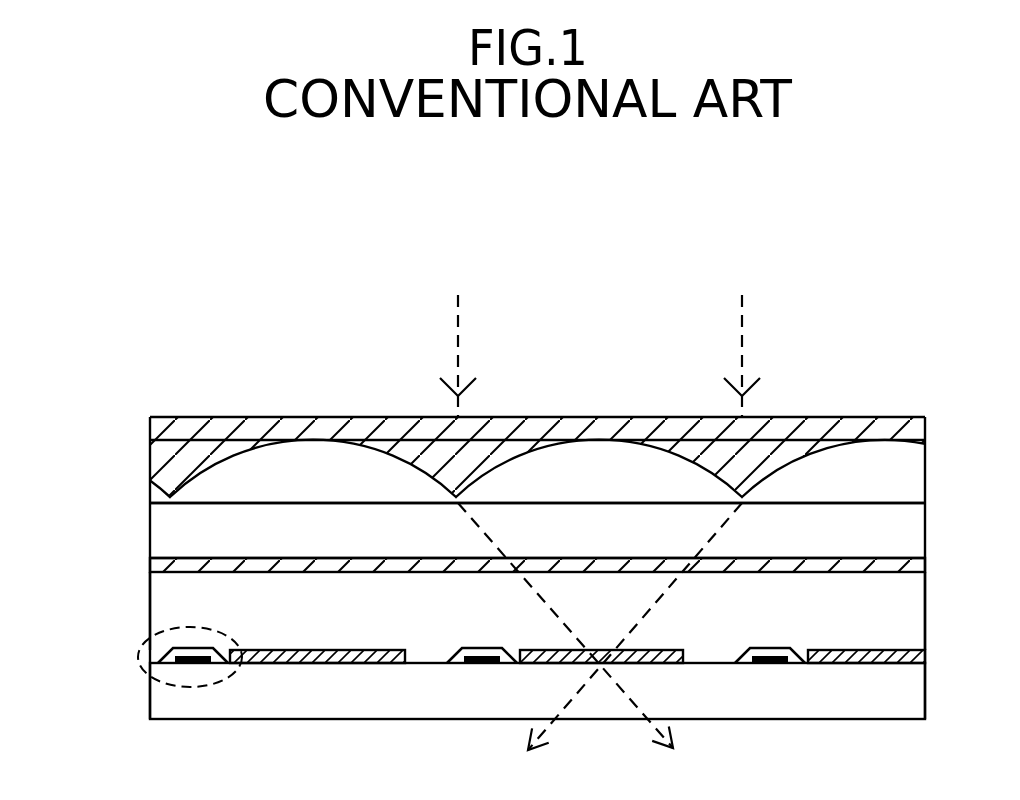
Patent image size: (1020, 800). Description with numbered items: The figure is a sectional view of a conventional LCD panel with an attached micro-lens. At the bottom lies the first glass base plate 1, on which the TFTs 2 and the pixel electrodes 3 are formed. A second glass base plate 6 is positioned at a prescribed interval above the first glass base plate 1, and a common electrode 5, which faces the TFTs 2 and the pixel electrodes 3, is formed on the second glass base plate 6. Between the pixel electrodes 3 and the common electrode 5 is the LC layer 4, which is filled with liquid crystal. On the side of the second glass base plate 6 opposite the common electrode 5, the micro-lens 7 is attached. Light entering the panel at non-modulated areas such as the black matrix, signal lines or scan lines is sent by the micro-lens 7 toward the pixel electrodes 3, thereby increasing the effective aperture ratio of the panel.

The first glass base plate 1 is at (175, 709).
The TFTs 2 is at (142, 667).
The pixel electrodes 3 is at (297, 652).
The LC layer 4 is at (168, 590).
The common electrode 5 is at (160, 567).
The second glass base plate 6 is at (158, 530).
The micro-lens 7 is at (225, 467).